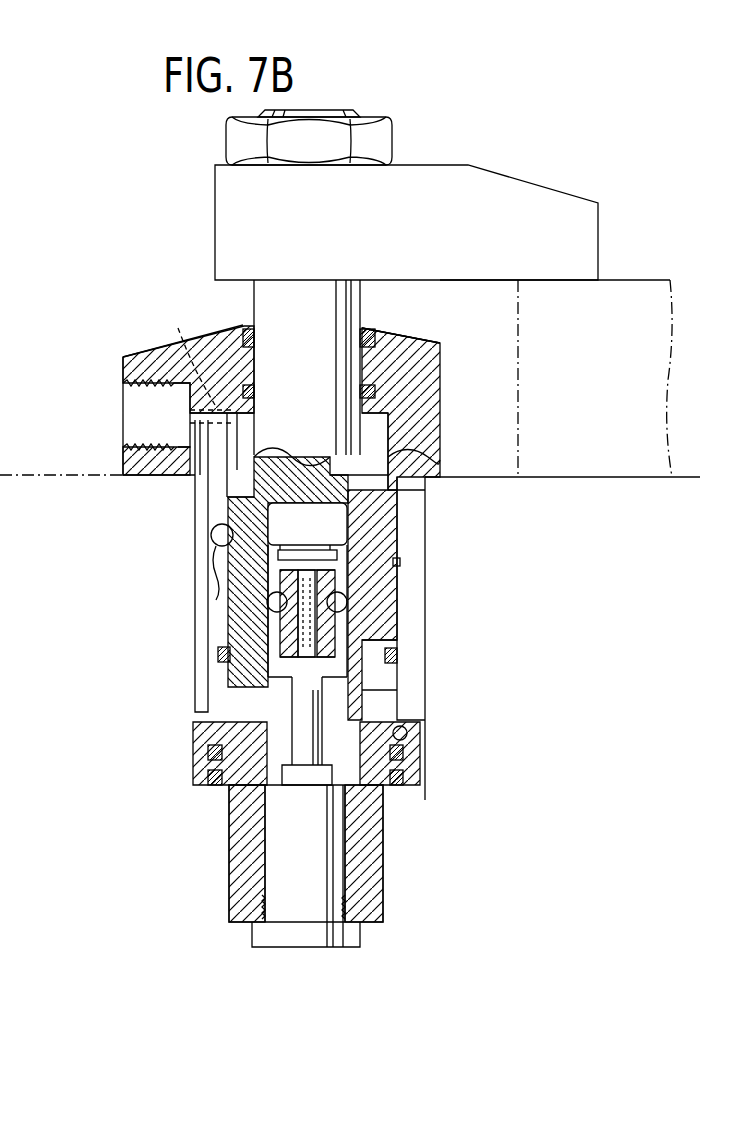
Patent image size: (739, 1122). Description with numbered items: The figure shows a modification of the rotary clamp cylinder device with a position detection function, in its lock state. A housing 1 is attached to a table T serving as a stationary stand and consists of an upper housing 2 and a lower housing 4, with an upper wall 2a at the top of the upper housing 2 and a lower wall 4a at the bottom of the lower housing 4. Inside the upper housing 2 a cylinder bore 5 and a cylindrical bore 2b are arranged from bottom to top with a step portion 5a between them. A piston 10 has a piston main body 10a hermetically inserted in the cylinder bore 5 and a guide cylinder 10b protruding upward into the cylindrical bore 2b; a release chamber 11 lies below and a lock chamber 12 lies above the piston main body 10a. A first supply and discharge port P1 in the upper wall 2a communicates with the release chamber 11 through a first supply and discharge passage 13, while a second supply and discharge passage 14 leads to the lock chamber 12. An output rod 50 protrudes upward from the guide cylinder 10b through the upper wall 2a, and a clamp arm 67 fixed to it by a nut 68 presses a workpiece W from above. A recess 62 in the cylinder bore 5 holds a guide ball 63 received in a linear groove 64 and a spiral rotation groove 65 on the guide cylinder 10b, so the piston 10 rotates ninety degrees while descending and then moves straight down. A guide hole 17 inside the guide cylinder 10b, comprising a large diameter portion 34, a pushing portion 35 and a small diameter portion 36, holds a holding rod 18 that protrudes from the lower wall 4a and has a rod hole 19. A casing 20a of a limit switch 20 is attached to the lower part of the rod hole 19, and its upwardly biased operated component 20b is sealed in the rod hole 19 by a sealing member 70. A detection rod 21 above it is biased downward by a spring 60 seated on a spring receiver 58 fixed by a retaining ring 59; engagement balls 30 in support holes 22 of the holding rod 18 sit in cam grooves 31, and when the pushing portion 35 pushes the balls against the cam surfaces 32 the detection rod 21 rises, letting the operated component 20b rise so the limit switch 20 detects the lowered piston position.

The housing 1 is at (428, 337).
The upper housing 2 is at (440, 345).
The upper wall 2a is at (435, 372).
The cylindrical bore 2b is at (384, 446).
The lower housing 4 is at (388, 802).
The lower wall 4a is at (215, 795).
The cylinder bore 5 is at (380, 718).
The step portion 5a is at (400, 562).
The piston 10 is at (208, 675).
The piston main body 10a is at (218, 652).
The guide cylinder 10b is at (378, 478).
The release chamber 11 is at (407, 736).
The lock chamber 12 is at (388, 435).
The first supply and discharge passage 13 is at (200, 468).
The second supply and discharge passage 14 is at (196, 355).
The guide hole 17 is at (378, 501).
The holding rod 18 is at (283, 707).
The rod hole 19 is at (300, 738).
The limit switch 20 is at (350, 896).
The casing 20a is at (325, 890).
The operated component 20b is at (205, 770).
The detection rod 21 is at (350, 692).
The support hole 22 is at (347, 603).
The engagement ball 30 is at (345, 590).
The cam groove 31 is at (285, 598).
The cam surface 32 is at (268, 594).
The large diameter portion 34 is at (397, 666).
The pushing portion 35 is at (395, 650).
The small diameter portion 36 is at (348, 532).
The output rod 50 is at (315, 318).
The spring receiver 58 is at (318, 550).
The retaining ring 59 is at (282, 550).
The spring 60 is at (240, 614).
The recess 62 is at (210, 532).
The guide ball 63 is at (212, 530).
The linear groove 64 is at (240, 500).
The rotation groove 65 is at (267, 602).
The clamp arm 67 is at (528, 200).
The nut 68 is at (370, 152).
The sealing member 70 is at (297, 762).
The workpiece W is at (650, 283).
The table T is at (686, 477).
The first supply and discharge port P1 is at (143, 415).